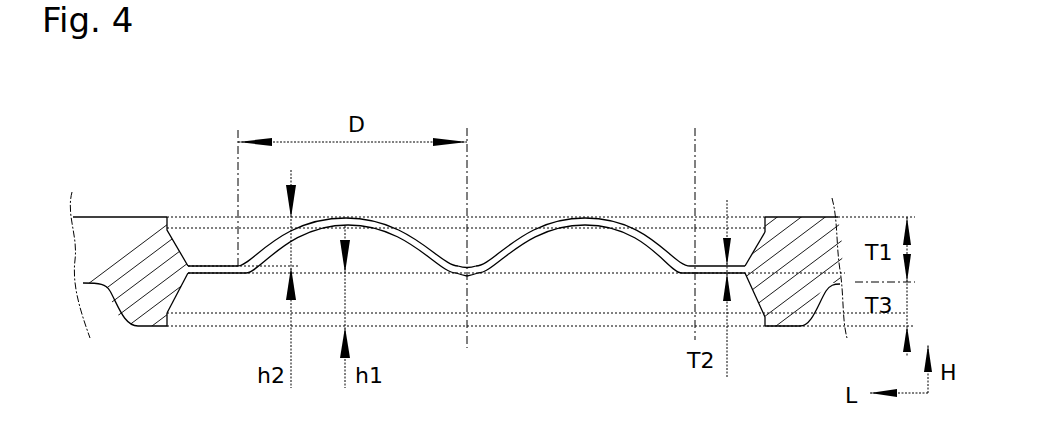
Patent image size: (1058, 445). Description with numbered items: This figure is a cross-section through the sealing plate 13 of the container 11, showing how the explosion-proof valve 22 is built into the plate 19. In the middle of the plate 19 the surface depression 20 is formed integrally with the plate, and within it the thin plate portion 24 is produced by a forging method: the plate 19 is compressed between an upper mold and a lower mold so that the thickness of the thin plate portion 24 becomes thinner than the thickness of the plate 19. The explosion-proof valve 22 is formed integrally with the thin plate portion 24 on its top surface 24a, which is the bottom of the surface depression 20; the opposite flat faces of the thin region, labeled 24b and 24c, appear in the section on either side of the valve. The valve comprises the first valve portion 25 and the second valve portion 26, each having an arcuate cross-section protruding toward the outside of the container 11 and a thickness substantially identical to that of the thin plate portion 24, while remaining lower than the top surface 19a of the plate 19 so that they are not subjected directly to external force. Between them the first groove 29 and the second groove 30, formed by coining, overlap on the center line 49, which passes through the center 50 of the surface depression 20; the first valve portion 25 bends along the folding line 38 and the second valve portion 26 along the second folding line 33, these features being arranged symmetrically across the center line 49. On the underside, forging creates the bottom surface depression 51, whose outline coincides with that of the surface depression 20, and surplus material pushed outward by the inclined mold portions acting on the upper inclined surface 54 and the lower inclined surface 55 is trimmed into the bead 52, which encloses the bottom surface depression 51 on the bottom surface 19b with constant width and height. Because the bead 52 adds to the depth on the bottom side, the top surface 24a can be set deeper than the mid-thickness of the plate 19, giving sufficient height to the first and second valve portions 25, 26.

The container 11 is at (857, 125).
The sealing plate 13 is at (800, 137).
The plate 19 is at (810, 272).
The top surface of the plate 19a is at (103, 217).
The bottom surface of the plate 19b is at (100, 284).
The surface depression 20 is at (130, 263).
The explosion-proof valve 22 is at (590, 172).
The thin plate portion 24 is at (206, 253).
The top surface of the thin plate portion 24a is at (212, 266).
The right flat portion 24b is at (748, 266).
The lower surface of flat portion 24c is at (212, 274).
The first valve portion 25 is at (348, 216).
The second valve portion 26 is at (588, 218).
The first groove 29 is at (465, 275).
The second groove 30 is at (470, 277).
The second folding line 33 is at (697, 162).
The folding line 38 is at (236, 143).
The center line 49 is at (468, 138).
The center 50 is at (467, 247).
The bottom surface depression 51 is at (179, 329).
The bead 52 is at (783, 326).
The upper inclined surface 54 is at (752, 250).
The lower inclined surface 55 is at (749, 283).